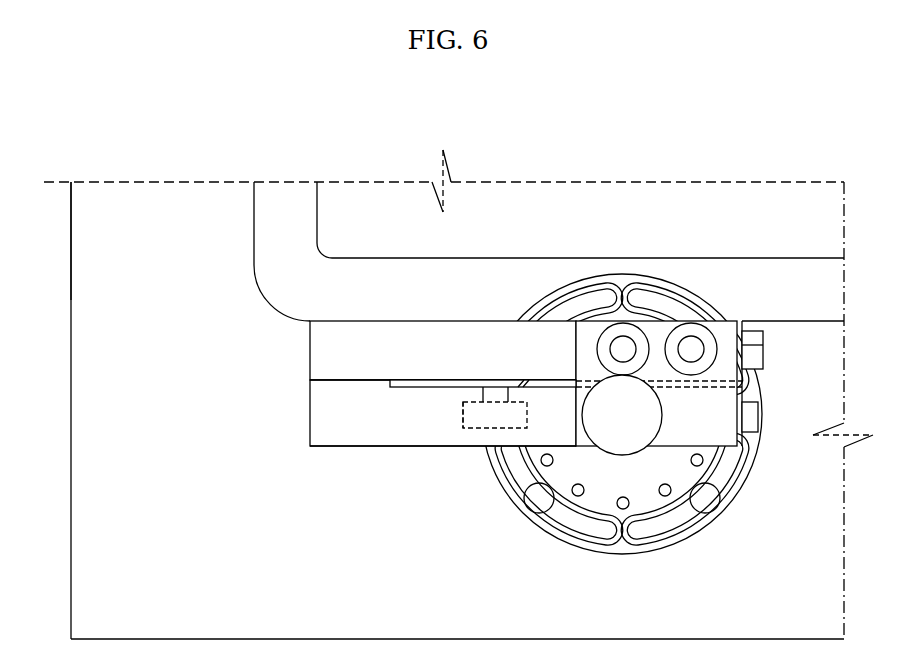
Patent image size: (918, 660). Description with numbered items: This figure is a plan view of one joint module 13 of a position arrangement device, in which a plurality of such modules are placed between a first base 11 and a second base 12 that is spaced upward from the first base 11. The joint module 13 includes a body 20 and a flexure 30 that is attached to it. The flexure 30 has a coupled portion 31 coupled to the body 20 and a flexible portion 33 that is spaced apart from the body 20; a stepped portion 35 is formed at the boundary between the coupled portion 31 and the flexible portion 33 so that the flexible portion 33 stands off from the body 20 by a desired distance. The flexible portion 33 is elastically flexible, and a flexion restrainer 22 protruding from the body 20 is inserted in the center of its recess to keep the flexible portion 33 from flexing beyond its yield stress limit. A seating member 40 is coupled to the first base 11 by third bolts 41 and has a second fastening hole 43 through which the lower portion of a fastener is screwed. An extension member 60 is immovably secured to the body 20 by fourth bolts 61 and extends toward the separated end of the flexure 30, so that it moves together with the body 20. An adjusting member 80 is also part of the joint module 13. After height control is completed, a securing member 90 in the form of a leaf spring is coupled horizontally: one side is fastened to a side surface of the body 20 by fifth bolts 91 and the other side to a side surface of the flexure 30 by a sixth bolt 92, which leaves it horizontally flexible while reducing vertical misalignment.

The first base 11 is at (113, 193).
The second base 12 is at (284, 193).
The joint module 13 is at (458, 82).
The body 20 is at (310, 344).
The flexion restrainer 22 is at (478, 412).
The flexure 30 is at (297, 418).
The coupled portion 31 is at (343, 403).
The flexible portion 33 is at (485, 438).
The stepped portion 35 is at (396, 381).
The seating member 40 is at (622, 547).
The third bolt 41 is at (705, 505).
The second fastening hole 43 is at (665, 496).
The extension member 60 is at (730, 346).
The fourth bolt 61 is at (693, 347).
The adjusting member 80 is at (622, 438).
The securing member 90 is at (742, 340).
The fifth bolt 91 is at (753, 353).
The sixth bolt 92 is at (752, 414).